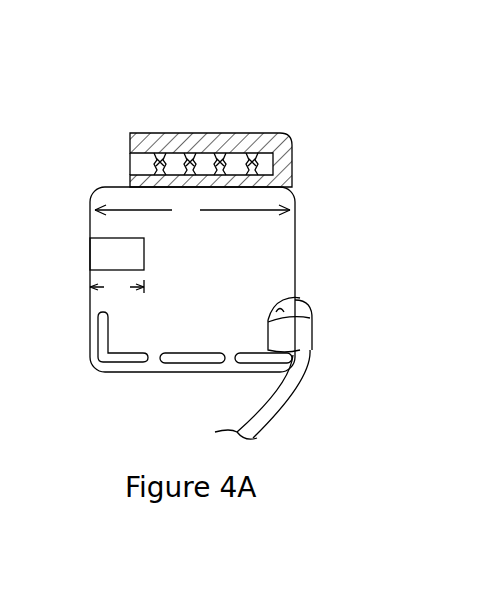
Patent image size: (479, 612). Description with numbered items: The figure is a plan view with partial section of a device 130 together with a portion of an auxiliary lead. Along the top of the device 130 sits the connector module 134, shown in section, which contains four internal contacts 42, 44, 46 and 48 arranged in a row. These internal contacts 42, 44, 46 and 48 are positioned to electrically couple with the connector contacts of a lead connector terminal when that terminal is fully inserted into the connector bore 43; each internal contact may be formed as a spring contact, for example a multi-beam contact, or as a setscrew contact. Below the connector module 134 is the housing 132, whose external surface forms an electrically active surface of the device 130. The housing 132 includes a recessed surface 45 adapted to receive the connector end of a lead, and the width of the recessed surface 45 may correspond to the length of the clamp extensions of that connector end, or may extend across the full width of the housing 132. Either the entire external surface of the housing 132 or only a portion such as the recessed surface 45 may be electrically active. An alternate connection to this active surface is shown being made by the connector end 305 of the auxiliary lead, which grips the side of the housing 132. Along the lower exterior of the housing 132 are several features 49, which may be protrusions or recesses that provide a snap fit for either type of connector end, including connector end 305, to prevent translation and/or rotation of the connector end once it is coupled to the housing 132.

The device 130 is at (381, 127).
The connector module 134 is at (272, 140).
The housing 132 is at (277, 253).
The internal contact 42 is at (172, 152).
The internal contact 44 is at (198, 160).
The internal contact 46 is at (243, 162).
The internal contact 48 is at (262, 155).
The connector bore 43 is at (137, 163).
The recessed surface 45 is at (103, 252).
The features 49 is at (105, 362).
The connector end 305 is at (300, 333).